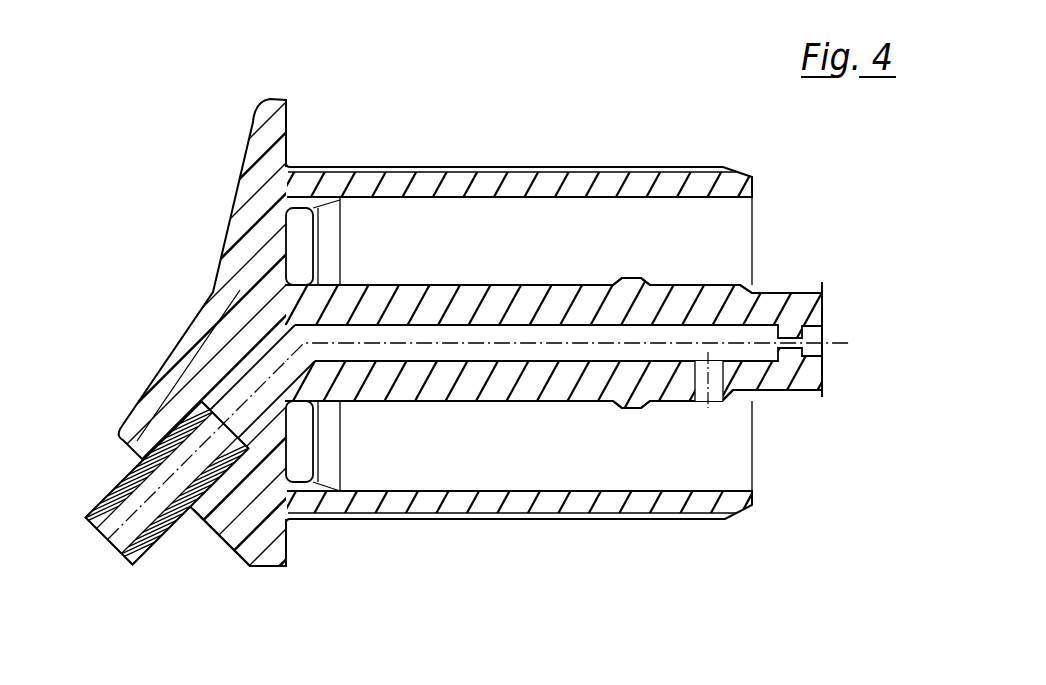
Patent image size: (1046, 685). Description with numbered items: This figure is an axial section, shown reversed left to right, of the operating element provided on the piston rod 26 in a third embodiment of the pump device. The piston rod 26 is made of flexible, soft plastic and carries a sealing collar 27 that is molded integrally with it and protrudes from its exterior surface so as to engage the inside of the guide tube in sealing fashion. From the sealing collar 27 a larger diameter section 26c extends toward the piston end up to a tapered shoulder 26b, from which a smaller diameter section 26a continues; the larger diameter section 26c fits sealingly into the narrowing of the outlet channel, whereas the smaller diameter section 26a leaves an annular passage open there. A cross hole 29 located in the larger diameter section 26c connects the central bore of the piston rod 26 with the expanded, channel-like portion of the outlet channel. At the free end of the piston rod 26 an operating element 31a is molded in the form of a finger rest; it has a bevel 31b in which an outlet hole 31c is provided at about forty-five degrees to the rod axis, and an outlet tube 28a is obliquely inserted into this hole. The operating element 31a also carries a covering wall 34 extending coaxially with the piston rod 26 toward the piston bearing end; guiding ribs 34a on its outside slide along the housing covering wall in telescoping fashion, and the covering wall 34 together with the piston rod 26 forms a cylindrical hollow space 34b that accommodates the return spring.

The piston rod 26 is at (559, 338).
The smaller diameter section 26a is at (787, 393).
The tapered shoulder 26b is at (753, 287).
The larger diameter section 26c is at (693, 284).
The sealing collar 27 is at (627, 279).
The outlet tube 28a is at (137, 563).
The cross hole 29 is at (705, 370).
The operating element 31a is at (237, 255).
The bevel 31b is at (210, 532).
The outlet hole 31c is at (240, 393).
The covering wall 34 is at (532, 301).
The guiding ribs 34a is at (443, 166).
The cylindrical hollow space 34b is at (540, 240).